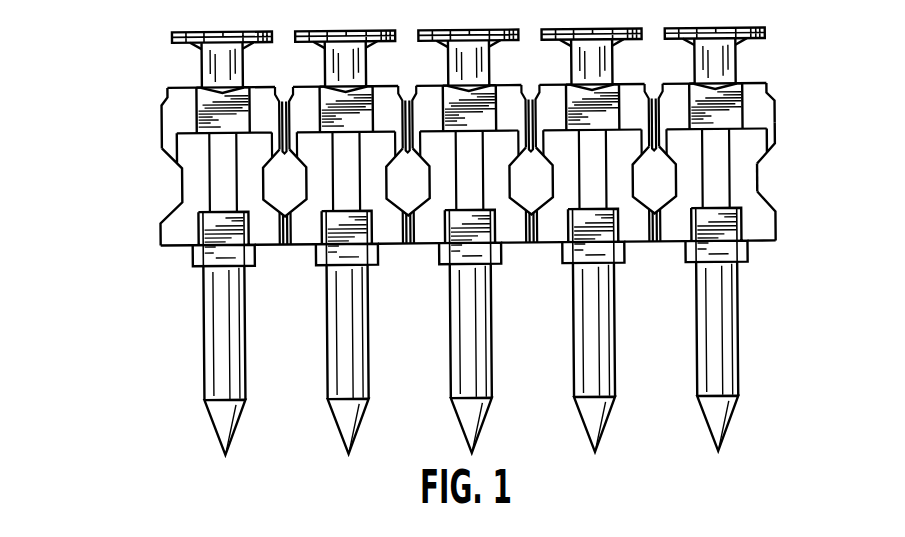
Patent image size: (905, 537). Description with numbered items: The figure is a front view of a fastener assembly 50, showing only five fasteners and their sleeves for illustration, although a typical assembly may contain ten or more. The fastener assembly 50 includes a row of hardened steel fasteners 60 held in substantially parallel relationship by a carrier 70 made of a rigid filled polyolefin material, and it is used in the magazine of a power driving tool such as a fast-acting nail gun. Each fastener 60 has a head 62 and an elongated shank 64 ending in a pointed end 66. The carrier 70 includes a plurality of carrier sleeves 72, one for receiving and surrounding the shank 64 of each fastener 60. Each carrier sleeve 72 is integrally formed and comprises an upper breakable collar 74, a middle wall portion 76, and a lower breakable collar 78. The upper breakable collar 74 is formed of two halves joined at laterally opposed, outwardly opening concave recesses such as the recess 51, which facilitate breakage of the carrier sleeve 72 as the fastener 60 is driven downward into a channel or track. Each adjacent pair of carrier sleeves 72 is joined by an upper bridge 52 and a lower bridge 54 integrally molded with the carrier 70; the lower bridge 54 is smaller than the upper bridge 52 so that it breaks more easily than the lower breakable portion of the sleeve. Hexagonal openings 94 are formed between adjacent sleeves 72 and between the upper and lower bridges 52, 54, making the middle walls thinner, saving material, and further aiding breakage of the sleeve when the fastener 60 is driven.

The fastener assembly 50 is at (136, 253).
The concave recess 51 is at (356, 88).
The upper bridge 52 is at (652, 101).
The lower bridge 54 is at (655, 244).
The fastener 60 is at (202, 68).
The head 62 is at (224, 29).
The shank 64 is at (202, 325).
The pointed end 66 is at (205, 416).
The carrier 70 is at (168, 96).
The carrier sleeve 72 is at (755, 99).
The upper breakable collar 74 is at (757, 118).
The middle wall portion 76 is at (741, 178).
The lower breakable collar 78 is at (760, 231).
The hexagonal opening 94 is at (521, 203).